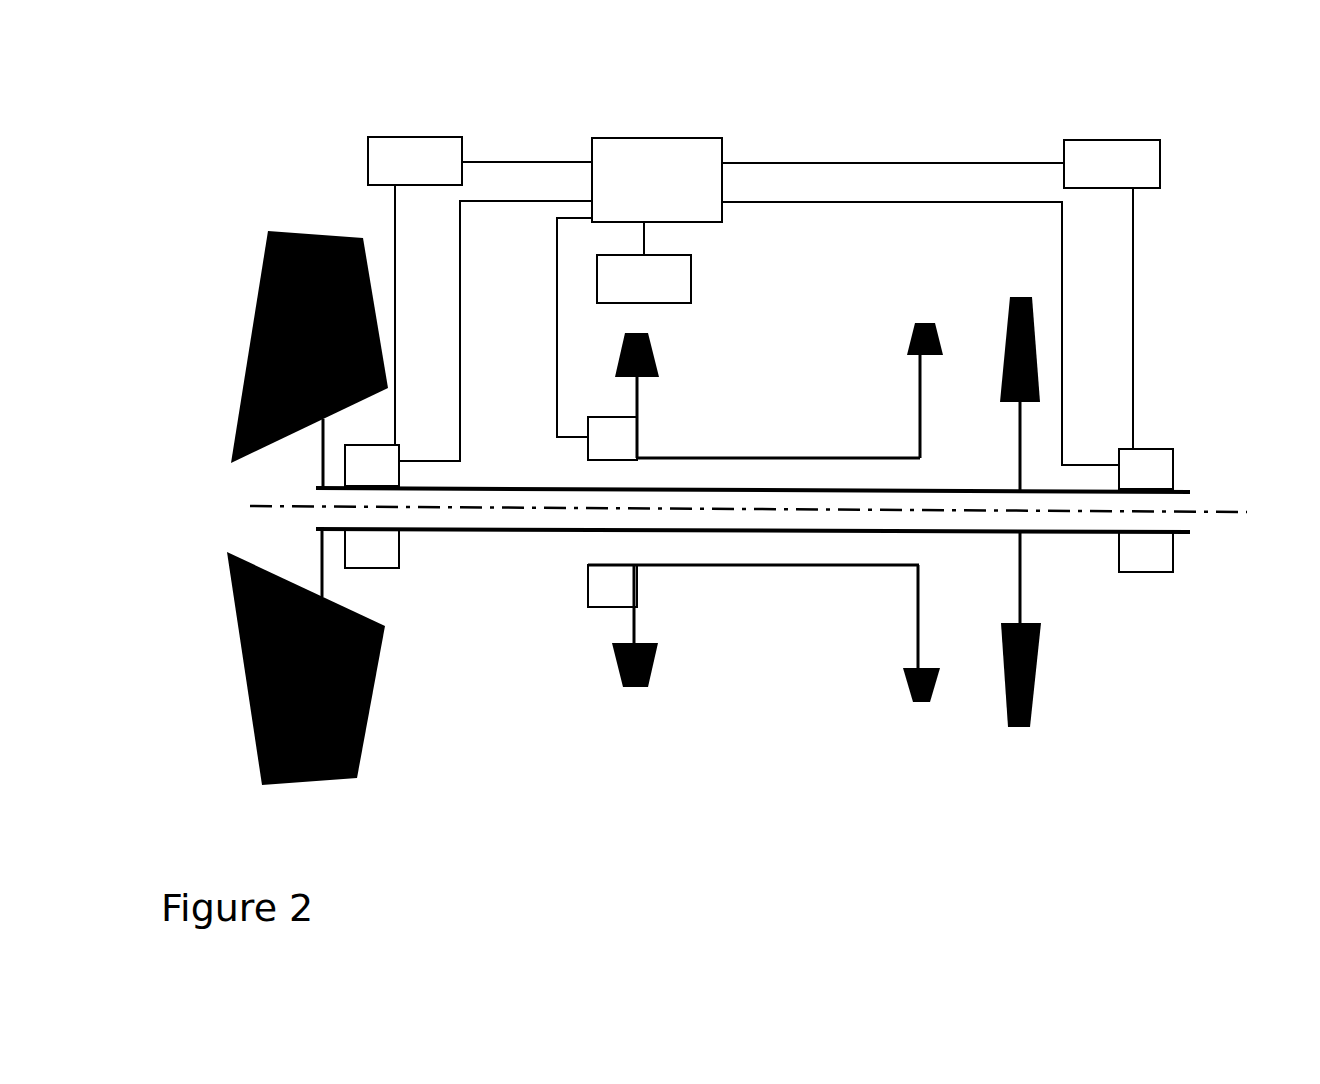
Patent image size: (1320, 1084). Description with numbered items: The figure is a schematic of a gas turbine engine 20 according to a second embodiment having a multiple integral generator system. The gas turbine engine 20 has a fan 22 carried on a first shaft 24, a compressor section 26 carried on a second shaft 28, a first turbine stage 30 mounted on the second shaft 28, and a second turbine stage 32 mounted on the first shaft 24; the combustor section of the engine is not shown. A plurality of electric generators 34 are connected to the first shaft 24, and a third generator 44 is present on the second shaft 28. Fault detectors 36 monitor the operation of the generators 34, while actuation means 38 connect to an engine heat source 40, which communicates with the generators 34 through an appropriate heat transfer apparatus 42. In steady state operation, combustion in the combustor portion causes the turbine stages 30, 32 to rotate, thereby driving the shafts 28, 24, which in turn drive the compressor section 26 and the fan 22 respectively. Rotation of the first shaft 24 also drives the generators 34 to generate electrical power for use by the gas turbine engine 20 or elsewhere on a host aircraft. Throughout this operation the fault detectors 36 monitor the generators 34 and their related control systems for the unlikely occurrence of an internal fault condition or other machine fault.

The gas turbine engine 20 is at (271, 182).
The fan 22 is at (380, 743).
The first shaft 24 is at (1074, 552).
The compressor section 26 is at (632, 730).
The second shaft 28 is at (838, 594).
The first turbine stage 30 is at (922, 752).
The second turbine stage 32 is at (1047, 761).
The electric generators 34 is at (312, 478).
The fault detectors 36 is at (399, 178).
The actuation means 38 is at (509, 160).
The engine heat source 40 is at (641, 198).
The heat transfer apparatus 42 is at (462, 282).
The third generator 44 is at (584, 468).